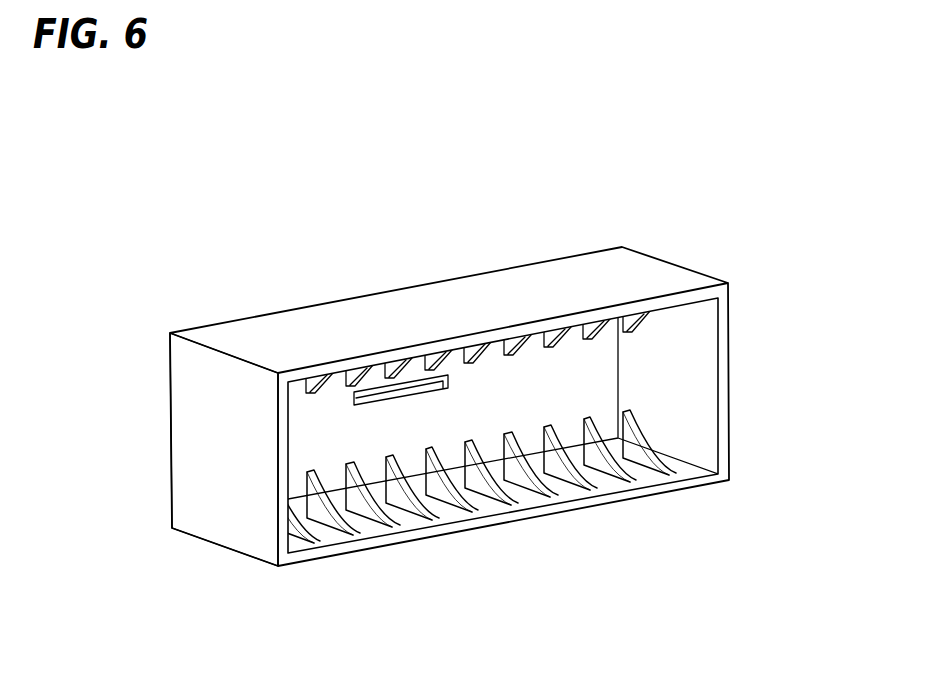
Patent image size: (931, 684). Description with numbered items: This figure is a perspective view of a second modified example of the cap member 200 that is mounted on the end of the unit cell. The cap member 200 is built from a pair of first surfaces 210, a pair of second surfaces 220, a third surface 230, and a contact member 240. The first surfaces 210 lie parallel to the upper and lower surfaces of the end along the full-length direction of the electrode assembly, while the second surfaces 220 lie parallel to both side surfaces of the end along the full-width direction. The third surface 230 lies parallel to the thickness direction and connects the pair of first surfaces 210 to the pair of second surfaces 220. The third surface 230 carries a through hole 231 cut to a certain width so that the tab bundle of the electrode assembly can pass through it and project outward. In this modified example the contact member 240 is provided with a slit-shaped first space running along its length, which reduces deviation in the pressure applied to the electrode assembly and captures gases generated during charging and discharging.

The cap member 200 is at (380, 312).
The first surfaces 210 is at (313, 302).
The second surfaces 220 is at (193, 447).
The third surface 230 is at (582, 377).
The through hole 231 is at (468, 344).
The contact member 240 is at (640, 437).